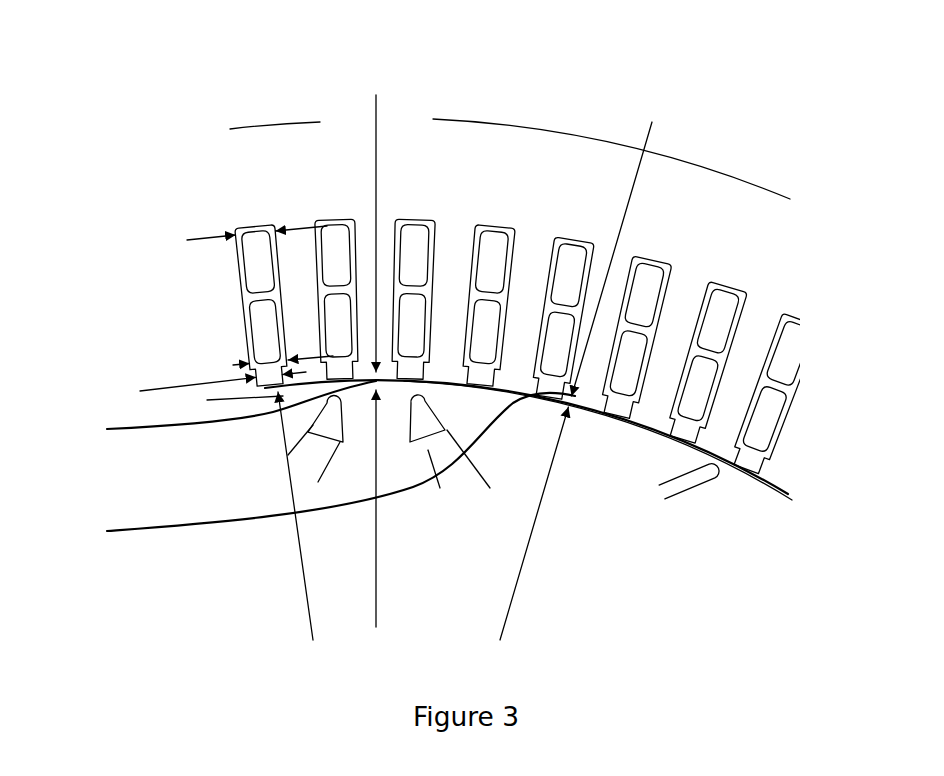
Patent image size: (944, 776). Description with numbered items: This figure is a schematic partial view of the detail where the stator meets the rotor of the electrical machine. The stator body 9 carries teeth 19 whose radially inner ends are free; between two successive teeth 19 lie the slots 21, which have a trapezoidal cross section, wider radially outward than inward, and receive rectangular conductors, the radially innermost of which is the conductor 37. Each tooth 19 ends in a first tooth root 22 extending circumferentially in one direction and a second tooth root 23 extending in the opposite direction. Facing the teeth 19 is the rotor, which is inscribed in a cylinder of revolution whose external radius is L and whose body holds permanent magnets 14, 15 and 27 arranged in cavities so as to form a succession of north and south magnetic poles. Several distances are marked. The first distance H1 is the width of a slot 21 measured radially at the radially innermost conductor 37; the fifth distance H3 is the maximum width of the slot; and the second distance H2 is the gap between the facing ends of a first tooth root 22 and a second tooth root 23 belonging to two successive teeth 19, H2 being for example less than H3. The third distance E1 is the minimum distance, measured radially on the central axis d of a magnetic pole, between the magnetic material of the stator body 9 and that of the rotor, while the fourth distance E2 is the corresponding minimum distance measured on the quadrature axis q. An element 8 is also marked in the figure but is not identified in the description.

The second distance H2 is at (165, 387).
The radially innermost conductor 37 is at (267, 330).
The fifth distance H3 is at (199, 238).
The first distance H1 is at (330, 356).
The quadrature axis q is at (376, 143).
The first tooth root 22 is at (492, 378).
The tooth 19 is at (531, 260).
The second tooth root 23 is at (523, 380).
The central axis of a magnetic pole d is at (637, 183).
The stator core 8 is at (728, 293).
The stator body 9 is at (780, 267).
The slot 21 is at (737, 329).
The fourth distance E2 is at (219, 410).
The permanent magnet 27 is at (307, 453).
The permanent magnet 14 is at (430, 450).
The third distance E1 is at (318, 471).
The external radius L is at (300, 572).
The permanent magnet 15 is at (670, 487).